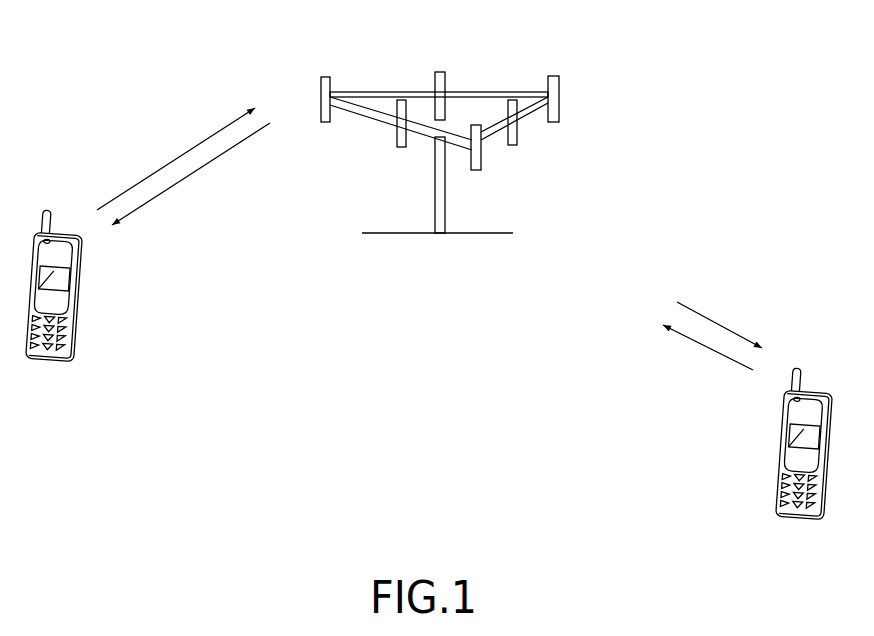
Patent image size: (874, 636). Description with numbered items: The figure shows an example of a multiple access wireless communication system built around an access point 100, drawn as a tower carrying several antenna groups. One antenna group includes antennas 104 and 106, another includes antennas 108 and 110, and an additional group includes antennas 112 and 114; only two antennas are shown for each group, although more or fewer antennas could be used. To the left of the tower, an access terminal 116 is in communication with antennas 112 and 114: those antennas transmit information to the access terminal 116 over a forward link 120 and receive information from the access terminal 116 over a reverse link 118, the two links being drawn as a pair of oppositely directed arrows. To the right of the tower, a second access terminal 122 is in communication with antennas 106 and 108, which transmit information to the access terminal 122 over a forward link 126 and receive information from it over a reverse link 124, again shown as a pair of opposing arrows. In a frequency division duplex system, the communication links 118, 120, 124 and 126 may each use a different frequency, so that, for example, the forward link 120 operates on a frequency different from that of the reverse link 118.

The access point 100 is at (420, 235).
The antenna 104 is at (477, 170).
The antenna 106 is at (514, 144).
The antenna 108 is at (556, 122).
The antenna 110 is at (443, 73).
The antenna 112 is at (330, 84).
The antenna 114 is at (402, 147).
The access terminal 116 is at (57, 233).
The reverse link 118 is at (177, 157).
The forward link 120 is at (198, 167).
The access terminal 122 is at (802, 388).
The reverse link 124 is at (702, 345).
The forward link 126 is at (723, 325).